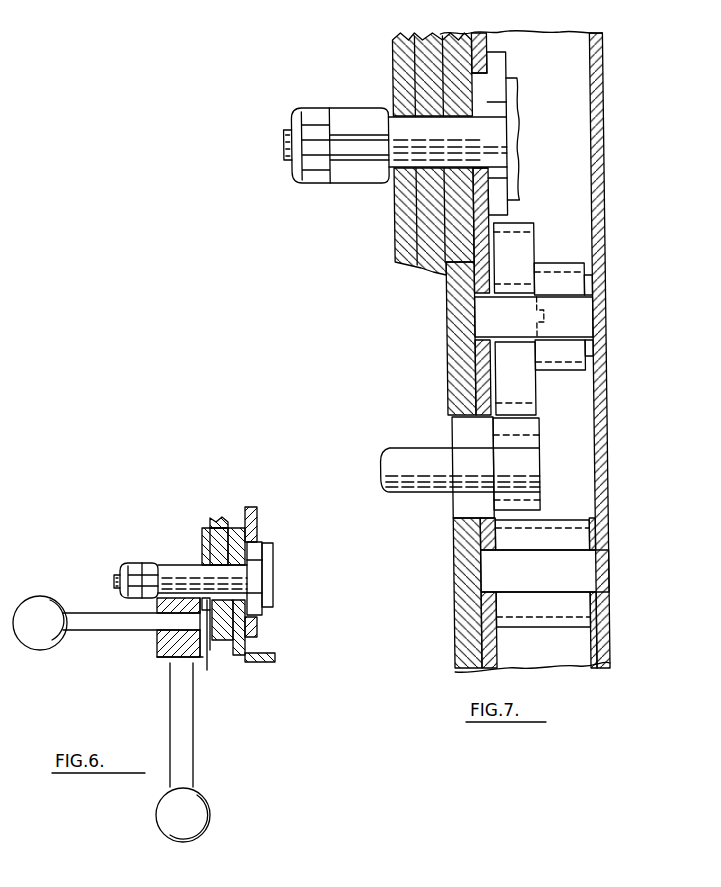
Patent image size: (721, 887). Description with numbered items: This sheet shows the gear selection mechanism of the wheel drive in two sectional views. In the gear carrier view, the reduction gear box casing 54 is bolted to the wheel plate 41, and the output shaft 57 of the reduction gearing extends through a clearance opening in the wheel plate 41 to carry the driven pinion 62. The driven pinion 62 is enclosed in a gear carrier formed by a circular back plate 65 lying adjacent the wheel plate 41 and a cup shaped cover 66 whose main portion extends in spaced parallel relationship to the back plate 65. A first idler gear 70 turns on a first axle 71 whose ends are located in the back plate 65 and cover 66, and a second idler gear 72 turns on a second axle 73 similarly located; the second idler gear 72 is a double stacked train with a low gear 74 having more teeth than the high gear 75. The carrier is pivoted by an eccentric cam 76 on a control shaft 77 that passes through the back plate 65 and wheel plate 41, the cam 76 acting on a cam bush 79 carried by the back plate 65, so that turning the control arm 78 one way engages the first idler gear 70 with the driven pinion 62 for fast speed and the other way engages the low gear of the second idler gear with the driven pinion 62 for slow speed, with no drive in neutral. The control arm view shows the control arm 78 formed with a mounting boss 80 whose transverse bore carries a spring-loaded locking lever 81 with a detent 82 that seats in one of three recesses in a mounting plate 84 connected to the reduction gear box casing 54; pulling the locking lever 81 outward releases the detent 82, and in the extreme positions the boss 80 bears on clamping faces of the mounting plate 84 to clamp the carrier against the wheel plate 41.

In FIG. 7, the wheel plate 41 is at (458, 398).
In FIG. 6, the wheel plate 41 is at (239, 648).
In FIG. 7, the reduction gear box casing 54 is at (455, 70).
In FIG. 6, the reduction gear box casing 54 is at (217, 518).
In FIG. 7, the output shaft 57 is at (413, 472).
In FIG. 7, the driven pinion 62 is at (525, 443).
In FIG. 7, the circular back plate 65 is at (470, 527).
In FIG. 6, the circular back plate 65 is at (252, 507).
In FIG. 7, the cup shaped cover 66 is at (597, 212).
In FIG. 7, the first idler gear 70 is at (578, 600).
In FIG. 7, the first axle 71 is at (597, 573).
In FIG. 7, the second idler gear 72 is at (543, 246).
In FIG. 7, the second axle 73 is at (586, 328).
In FIG. 7, the low gear 74 is at (510, 370).
In FIG. 7, the high gear 75 is at (553, 283).
In FIG. 7, the eccentric cam 76 is at (490, 123).
In FIG. 6, the eccentric cam 76 is at (268, 593).
In FIG. 7, the control shaft 77 is at (395, 143).
In FIG. 6, the control shaft 77 is at (170, 578).
In FIG. 6, the control arm 78 is at (182, 747).
In FIG. 7, the cam bush 79 is at (490, 78).
In FIG. 6, the cam bush 79 is at (254, 560).
In FIG. 6, the mounting boss 80 is at (167, 640).
In FIG. 6, the locking lever 81 is at (92, 622).
In FIG. 6, the detent 82 is at (208, 652).
In FIG. 7, the mounting plate 84 is at (398, 240).
In FIG. 6, the mounting plate 84 is at (207, 553).